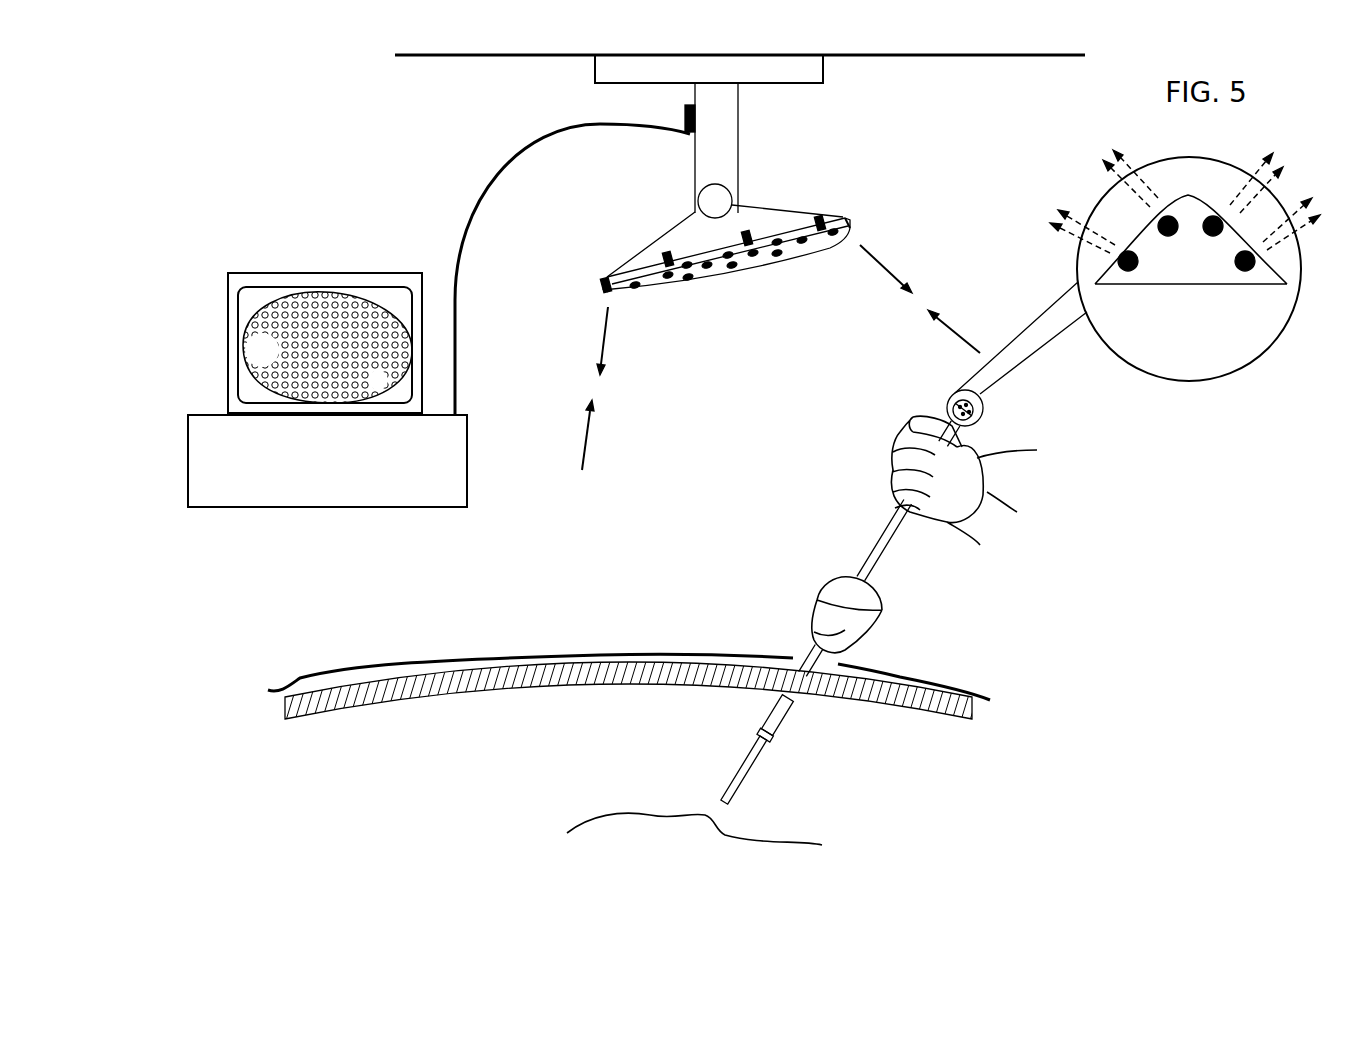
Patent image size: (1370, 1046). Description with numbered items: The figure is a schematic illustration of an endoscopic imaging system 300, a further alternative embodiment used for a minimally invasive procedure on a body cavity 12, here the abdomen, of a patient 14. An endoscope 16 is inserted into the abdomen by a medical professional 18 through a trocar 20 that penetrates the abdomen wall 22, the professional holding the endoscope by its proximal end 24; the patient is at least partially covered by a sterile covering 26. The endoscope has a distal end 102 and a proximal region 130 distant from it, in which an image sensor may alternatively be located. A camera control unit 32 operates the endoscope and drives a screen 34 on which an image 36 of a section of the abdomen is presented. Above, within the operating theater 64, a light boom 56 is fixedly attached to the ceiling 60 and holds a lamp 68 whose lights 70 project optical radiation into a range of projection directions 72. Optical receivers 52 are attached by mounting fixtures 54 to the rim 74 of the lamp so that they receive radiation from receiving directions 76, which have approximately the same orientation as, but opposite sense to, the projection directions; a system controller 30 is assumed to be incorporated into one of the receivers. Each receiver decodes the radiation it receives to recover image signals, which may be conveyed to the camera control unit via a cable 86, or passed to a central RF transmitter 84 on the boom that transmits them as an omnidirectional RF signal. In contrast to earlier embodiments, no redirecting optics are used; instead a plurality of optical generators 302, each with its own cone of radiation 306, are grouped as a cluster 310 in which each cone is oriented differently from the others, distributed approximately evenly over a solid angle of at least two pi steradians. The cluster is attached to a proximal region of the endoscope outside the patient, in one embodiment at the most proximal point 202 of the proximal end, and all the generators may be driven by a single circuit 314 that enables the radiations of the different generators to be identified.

The endoscopic imaging system 300 is at (205, 219).
The system controller 30 is at (304, 171).
The ceiling 60 is at (420, 57).
The light boom 56 is at (738, 108).
The central RF transmitter 84 is at (685, 118).
The cable 86 is at (468, 213).
The lamp 68 is at (648, 262).
The rim 74 is at (853, 223).
The optical receivers 52 is at (603, 283).
The mounting fixtures 54 is at (606, 284).
The lights 70 is at (753, 256).
The projection directions 72 is at (606, 337).
The receiving directions 76 is at (590, 436).
The screen 34 is at (228, 355).
The image 36 is at (253, 312).
The camera control unit 32 is at (188, 473).
The operating theater 64 is at (734, 431).
The cluster 310 is at (957, 391).
The optical generators 302 is at (1128, 261).
The cones of radiation 306 is at (1115, 172).
The most proximal point 202 is at (947, 414).
The medical professional 18 is at (995, 458).
The single circuit 314 is at (852, 471).
The proximal end 24 is at (886, 525).
The trocar 20 is at (877, 617).
The endoscope 16 is at (753, 767).
The distal end 102 is at (710, 760).
The body cavity 12 is at (618, 786).
The proximal region 130 is at (1045, 629).
The sterile covering 26 is at (512, 652).
The abdomen wall 22 is at (588, 668).
The patient 14 is at (440, 678).